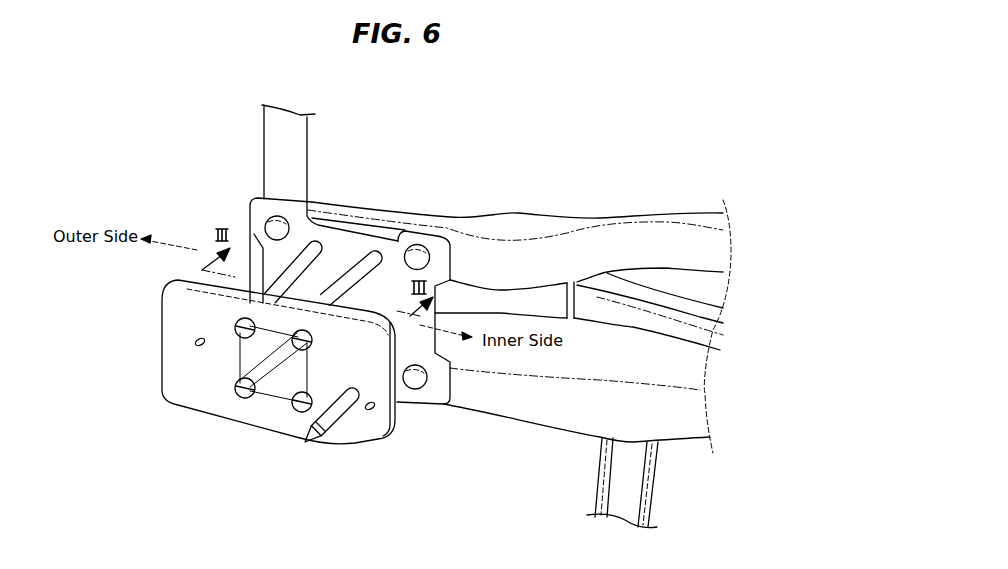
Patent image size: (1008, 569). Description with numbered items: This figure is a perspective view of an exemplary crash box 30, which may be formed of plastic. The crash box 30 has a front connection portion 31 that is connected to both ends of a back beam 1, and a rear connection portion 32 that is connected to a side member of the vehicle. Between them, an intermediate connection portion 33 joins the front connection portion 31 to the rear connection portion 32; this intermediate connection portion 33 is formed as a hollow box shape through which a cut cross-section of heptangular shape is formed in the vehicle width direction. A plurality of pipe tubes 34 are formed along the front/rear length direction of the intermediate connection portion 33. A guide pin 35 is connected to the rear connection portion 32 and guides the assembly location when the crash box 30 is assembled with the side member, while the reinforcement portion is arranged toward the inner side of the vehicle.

The back beam 1 is at (612, 242).
The crash box 30 is at (312, 321).
The front connection portion 31 is at (372, 242).
The rear connection portion 32 is at (243, 413).
The intermediate connection portion 33 is at (336, 262).
The pipe tubes 34 is at (265, 226).
The guide pin 35 is at (352, 422).